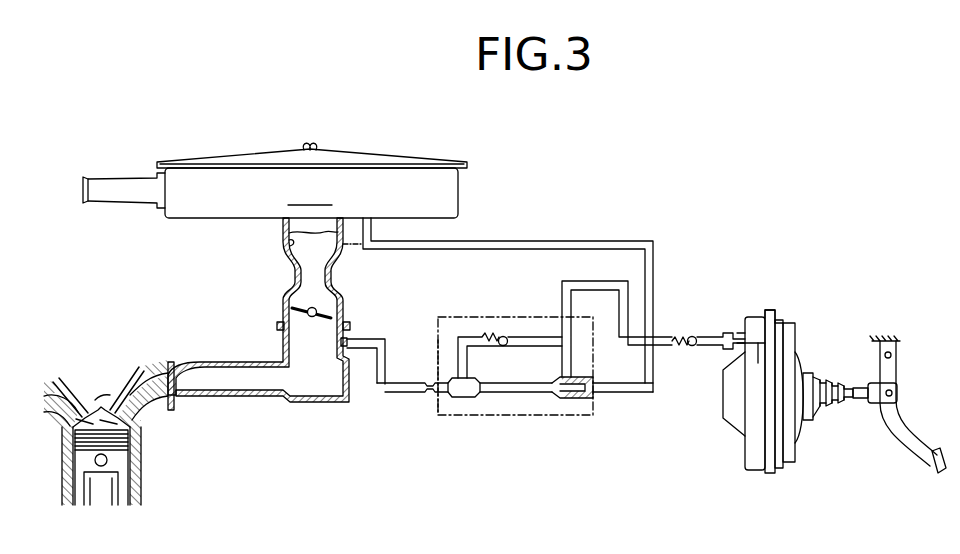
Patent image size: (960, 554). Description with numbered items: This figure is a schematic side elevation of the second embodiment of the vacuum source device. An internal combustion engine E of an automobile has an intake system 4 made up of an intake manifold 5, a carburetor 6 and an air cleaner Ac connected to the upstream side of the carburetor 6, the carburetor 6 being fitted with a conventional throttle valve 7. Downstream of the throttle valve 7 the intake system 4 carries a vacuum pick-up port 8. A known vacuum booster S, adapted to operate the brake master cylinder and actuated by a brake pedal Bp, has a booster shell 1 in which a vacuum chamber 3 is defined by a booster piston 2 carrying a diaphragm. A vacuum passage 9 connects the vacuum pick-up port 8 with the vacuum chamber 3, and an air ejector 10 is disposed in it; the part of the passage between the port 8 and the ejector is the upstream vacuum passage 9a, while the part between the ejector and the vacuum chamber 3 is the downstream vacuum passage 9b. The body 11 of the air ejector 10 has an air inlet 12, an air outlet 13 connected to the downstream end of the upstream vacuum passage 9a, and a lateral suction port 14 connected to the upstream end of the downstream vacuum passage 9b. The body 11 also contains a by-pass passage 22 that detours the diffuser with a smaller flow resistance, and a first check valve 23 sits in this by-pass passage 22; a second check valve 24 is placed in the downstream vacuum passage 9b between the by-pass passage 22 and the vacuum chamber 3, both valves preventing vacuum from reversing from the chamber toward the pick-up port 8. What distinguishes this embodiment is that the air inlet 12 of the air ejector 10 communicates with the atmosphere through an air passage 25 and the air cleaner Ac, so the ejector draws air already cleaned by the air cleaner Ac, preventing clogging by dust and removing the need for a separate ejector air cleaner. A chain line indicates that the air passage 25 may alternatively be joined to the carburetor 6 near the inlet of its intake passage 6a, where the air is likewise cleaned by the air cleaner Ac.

The air cleaner Ac is at (275, 180).
The internal combustion engine E is at (97, 387).
The intake system 4 is at (228, 403).
The intake manifold 5 is at (222, 362).
The carburetor 6 is at (284, 300).
The intake passage 6a is at (289, 244).
The throttle valve 7 is at (313, 316).
The vacuum pick-up port 8 is at (346, 346).
The vacuum passage 9 is at (383, 396).
The upstream vacuum passage 9a is at (386, 347).
The downstream vacuum passage 9b is at (584, 276).
The air ejector 10 is at (525, 417).
The body 11 is at (483, 416).
The air inlet 12 is at (597, 390).
The air outlet 13 is at (436, 392).
The suction port 14 is at (565, 311).
The by-pass passage 22 is at (460, 336).
The first check valve 23 is at (501, 336).
The second check valve 24 is at (691, 336).
The air passage 25 is at (520, 241).
The booster shell 1 is at (756, 317).
The booster piston 2 is at (784, 322).
The vacuum chamber 3 is at (757, 348).
The vacuum booster S is at (810, 375).
The brake pedal Bp is at (937, 471).